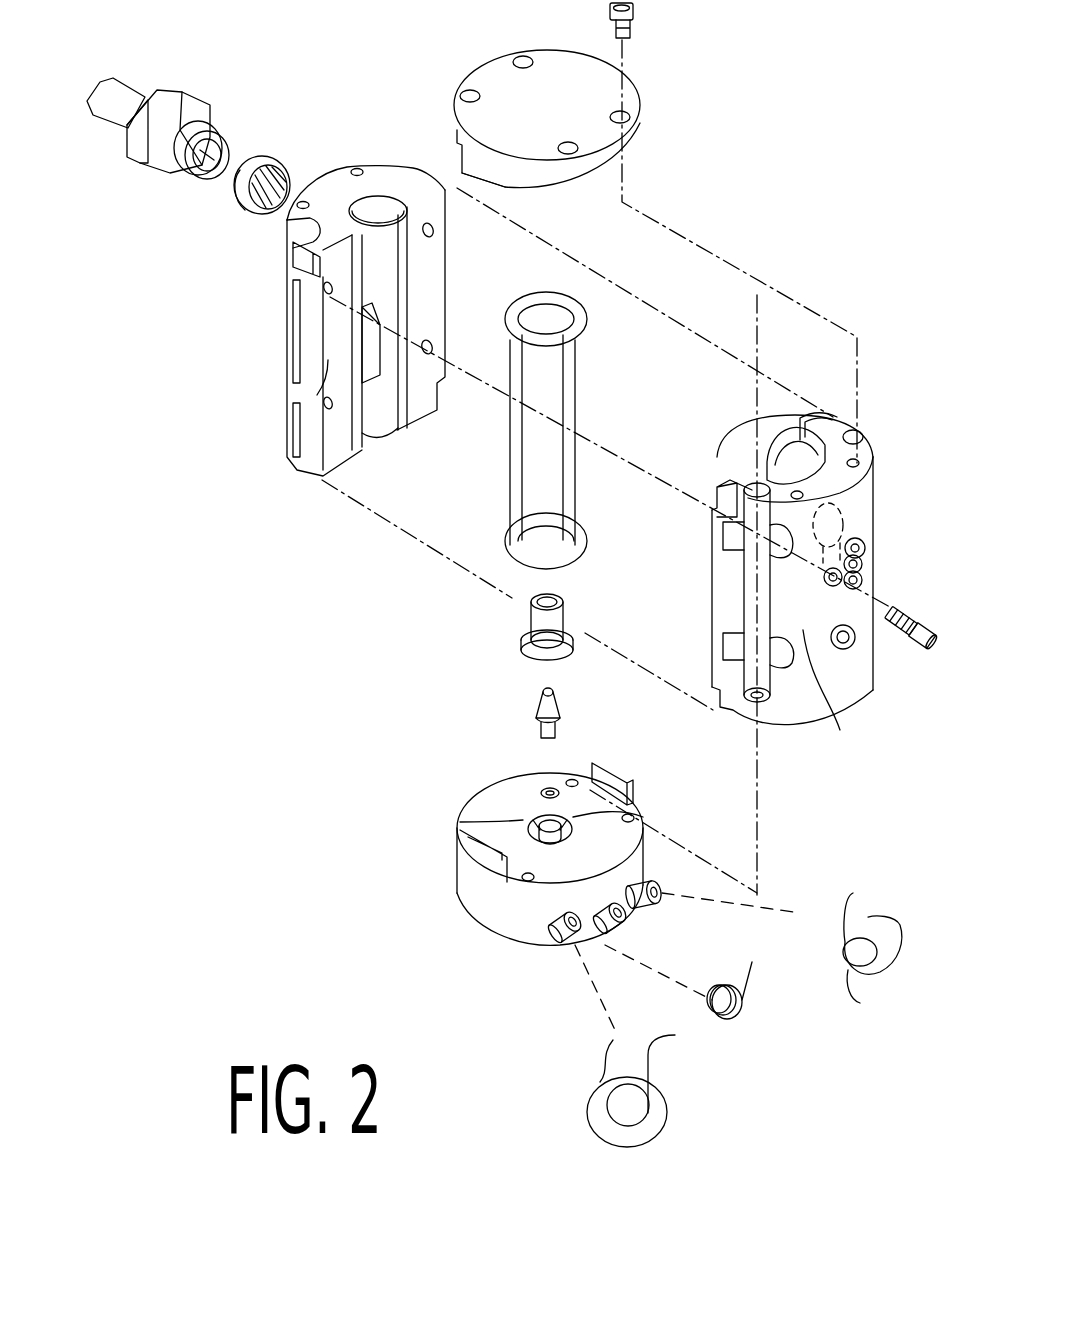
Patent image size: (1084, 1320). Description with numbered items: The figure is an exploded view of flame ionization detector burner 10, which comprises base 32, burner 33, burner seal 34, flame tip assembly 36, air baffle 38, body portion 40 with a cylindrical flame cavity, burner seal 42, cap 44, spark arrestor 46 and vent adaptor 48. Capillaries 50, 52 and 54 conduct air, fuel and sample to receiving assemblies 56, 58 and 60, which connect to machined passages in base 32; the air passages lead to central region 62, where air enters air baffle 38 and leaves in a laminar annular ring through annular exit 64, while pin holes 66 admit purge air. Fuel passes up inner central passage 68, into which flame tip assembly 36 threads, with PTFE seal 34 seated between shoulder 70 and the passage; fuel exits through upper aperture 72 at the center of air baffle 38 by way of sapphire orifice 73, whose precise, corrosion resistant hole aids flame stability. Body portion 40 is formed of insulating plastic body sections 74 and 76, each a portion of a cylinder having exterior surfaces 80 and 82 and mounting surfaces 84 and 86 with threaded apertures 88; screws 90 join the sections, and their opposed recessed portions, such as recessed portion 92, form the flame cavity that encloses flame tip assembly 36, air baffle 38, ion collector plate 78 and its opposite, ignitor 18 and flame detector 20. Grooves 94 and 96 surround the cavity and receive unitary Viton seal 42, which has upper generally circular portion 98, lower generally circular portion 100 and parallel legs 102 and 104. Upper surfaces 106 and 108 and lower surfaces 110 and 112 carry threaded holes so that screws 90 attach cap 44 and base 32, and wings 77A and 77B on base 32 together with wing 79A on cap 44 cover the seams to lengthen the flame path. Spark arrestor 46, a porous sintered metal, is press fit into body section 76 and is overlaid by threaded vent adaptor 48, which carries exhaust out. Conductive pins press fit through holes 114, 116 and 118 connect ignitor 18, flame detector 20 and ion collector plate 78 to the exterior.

The flame ionization detector burner 10 is at (840, 130).
The ignitor 18 is at (860, 590).
The flame detector 20 is at (760, 482).
The base 32 is at (541, 858).
The burner 33 is at (520, 744).
The burner seal 34 is at (525, 796).
The flame tip assembly 36 is at (553, 697).
The air baffle 38 is at (537, 623).
The body portion 40 is at (331, 314).
The burner seal 42 is at (547, 432).
The cap 44 is at (632, 117).
The spark arrestor 46 is at (240, 200).
The vent adaptor 48 is at (137, 166).
The capillary 50 is at (667, 1110).
The capillary 52 is at (738, 1014).
The capillary 54 is at (873, 956).
The receiving assembly 56 is at (558, 937).
The receiving assembly 58 is at (598, 937).
The receiving assembly 60 is at (645, 906).
The central region 62 is at (500, 835).
The annular exit 64 is at (530, 606).
The pin holes 66 is at (530, 641).
The inner central passage 68 is at (634, 815).
The shoulder 70 is at (535, 723).
The upper aperture 72 is at (535, 704).
The sapphire orifice 73 is at (552, 690).
The body section 74 is at (815, 556).
The body section 76 is at (362, 314).
The wing 77A is at (483, 860).
The wing 77B is at (607, 777).
The ion collector plate 78 is at (385, 345).
The wing 79A is at (505, 187).
The exterior surface 80 is at (841, 694).
The exterior surface 82 is at (295, 300).
The mounting surface 84 is at (828, 410).
The mounting surface 86 is at (300, 397).
The threaded apertures 88 is at (325, 420).
The screws 90 is at (633, 14).
The recessed portion 92 is at (385, 205).
The groove 94 is at (318, 215).
The groove 96 is at (800, 445).
The upper generally circular portion 98 is at (575, 322).
The lower generally circular portion 100 is at (582, 542).
The leg 102 is at (510, 463).
The leg 104 is at (568, 475).
The upper surface 106 is at (848, 432).
The upper surface 108 is at (415, 210).
The lower surface 110 is at (777, 727).
The lower surface 112 is at (318, 480).
The hole 114 is at (855, 537).
The hole 116 is at (862, 560).
The hole 118 is at (862, 581).